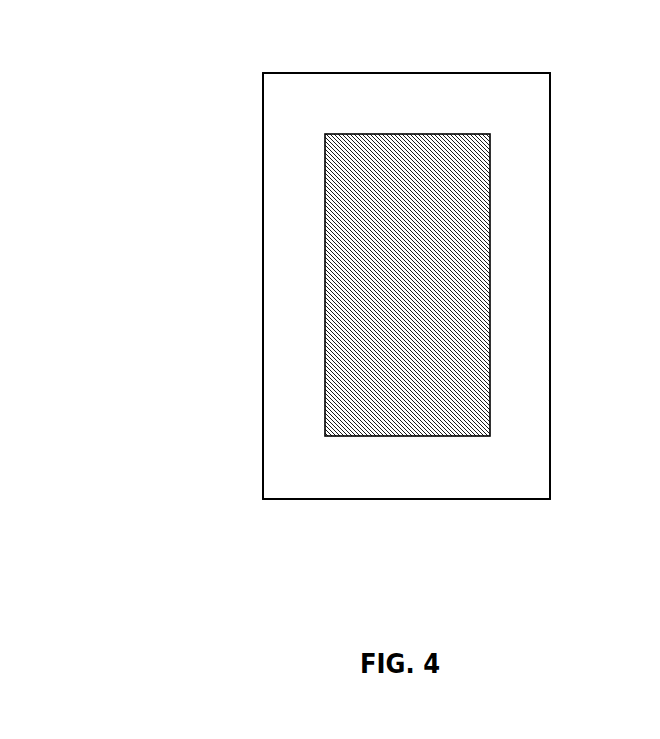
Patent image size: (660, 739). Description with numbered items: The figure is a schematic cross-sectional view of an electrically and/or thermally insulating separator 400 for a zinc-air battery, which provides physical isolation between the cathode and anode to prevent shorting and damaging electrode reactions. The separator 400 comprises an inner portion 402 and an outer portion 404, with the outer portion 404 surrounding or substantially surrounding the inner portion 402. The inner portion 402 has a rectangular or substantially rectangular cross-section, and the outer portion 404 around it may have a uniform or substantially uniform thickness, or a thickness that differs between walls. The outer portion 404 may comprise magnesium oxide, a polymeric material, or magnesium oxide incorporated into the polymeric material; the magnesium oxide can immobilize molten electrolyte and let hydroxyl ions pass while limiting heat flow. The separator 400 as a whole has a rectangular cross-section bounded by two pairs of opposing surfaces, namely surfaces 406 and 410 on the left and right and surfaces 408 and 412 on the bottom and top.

The separator 400 is at (91, 93).
The inner portion 402 is at (373, 370).
The outer portion 404 is at (287, 248).
The opposing surface 406 is at (261, 335).
The opposing surface 408 is at (479, 501).
The opposing surface 410 is at (552, 284).
The opposing surface 412 is at (392, 70).